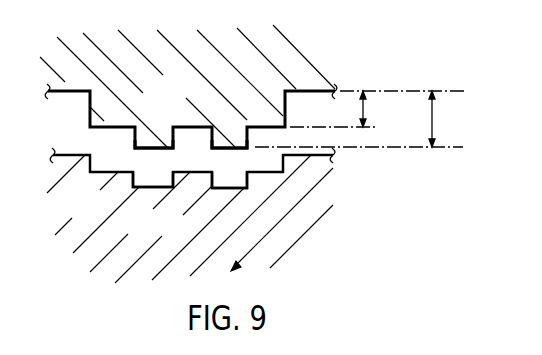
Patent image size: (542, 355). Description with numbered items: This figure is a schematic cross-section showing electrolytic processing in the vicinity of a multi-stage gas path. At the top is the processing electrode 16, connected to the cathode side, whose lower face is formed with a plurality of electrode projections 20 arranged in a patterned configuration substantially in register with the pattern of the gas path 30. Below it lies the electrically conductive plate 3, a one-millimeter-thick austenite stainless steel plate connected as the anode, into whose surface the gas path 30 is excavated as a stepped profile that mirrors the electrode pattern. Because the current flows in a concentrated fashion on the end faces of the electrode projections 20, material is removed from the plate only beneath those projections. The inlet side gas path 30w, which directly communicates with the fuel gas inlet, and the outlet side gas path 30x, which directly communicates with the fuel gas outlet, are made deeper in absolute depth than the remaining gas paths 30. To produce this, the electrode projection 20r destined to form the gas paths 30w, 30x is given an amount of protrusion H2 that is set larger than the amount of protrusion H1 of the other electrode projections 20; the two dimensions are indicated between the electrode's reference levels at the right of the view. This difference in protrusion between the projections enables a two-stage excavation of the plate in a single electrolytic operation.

The electrically conductive plate 3 is at (257, 213).
The processing electrode 16 is at (312, 72).
The electrode projections 20 is at (101, 124).
The electrode projection 20r is at (225, 138).
The gas path 30 is at (106, 163).
The inlet side gas path 30w is at (152, 178).
The outlet side gas path 30x is at (152, 178).
The amount of protrusion H1 is at (368, 104).
The amount of protrusion H2 is at (434, 118).